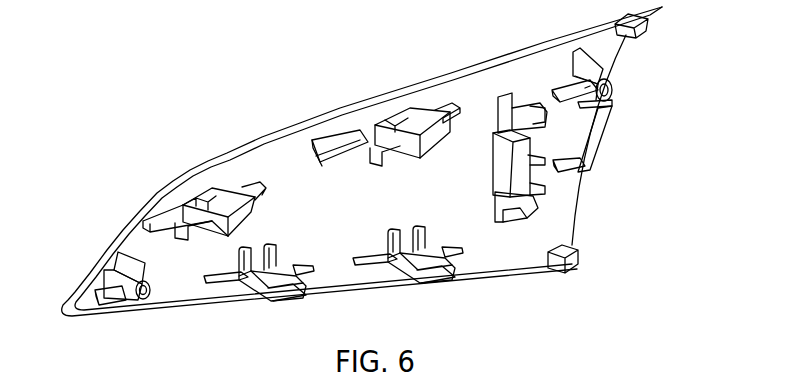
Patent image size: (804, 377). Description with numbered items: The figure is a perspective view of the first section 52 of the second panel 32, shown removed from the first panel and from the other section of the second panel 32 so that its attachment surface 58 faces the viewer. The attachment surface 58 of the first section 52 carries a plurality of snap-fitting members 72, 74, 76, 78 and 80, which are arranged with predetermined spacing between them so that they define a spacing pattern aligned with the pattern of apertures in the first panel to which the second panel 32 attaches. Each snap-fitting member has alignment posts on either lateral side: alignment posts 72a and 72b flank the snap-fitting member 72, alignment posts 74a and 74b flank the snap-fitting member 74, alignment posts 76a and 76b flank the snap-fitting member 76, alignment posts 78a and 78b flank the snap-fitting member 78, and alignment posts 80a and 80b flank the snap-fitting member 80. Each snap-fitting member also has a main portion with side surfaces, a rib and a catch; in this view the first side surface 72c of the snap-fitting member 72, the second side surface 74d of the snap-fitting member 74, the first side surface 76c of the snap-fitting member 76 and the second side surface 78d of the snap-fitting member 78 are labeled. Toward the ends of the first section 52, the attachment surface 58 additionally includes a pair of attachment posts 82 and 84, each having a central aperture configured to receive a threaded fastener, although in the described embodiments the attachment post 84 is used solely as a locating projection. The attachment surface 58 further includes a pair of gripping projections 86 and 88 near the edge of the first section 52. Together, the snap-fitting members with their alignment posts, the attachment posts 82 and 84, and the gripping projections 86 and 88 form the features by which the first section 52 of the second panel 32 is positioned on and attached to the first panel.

The second panel 32 is at (303, 53).
The first section 52 is at (452, 72).
The attachment surface 58 is at (278, 158).
The snap-fitting member 72 is at (290, 285).
The alignment post 72a is at (262, 290).
The alignment post 72b is at (306, 278).
The first side surface 72c is at (279, 275).
The snap-fitting member 74 is at (230, 196).
The alignment post 74a is at (206, 220).
The alignment post 74b is at (262, 196).
The second side surface 74d is at (205, 200).
The snap-fitting member 76 is at (441, 270).
The alignment post 76a is at (410, 270).
The alignment post 76b is at (458, 262).
The first side surface 76c is at (428, 265).
The snap-fitting member 78 is at (425, 125).
The alignment post 78a is at (402, 146).
The alignment post 78b is at (456, 120).
The second side surface 78d is at (400, 128).
The snap-fitting member 80 is at (500, 170).
The alignment post 80a is at (526, 212).
The alignment post 80b is at (512, 118).
The attachment post 82 is at (120, 288).
The attachment post 84 is at (612, 92).
The gripping projection 86 is at (566, 272).
The gripping projection 88 is at (636, 32).